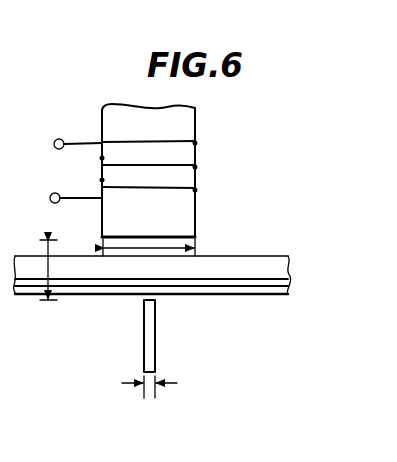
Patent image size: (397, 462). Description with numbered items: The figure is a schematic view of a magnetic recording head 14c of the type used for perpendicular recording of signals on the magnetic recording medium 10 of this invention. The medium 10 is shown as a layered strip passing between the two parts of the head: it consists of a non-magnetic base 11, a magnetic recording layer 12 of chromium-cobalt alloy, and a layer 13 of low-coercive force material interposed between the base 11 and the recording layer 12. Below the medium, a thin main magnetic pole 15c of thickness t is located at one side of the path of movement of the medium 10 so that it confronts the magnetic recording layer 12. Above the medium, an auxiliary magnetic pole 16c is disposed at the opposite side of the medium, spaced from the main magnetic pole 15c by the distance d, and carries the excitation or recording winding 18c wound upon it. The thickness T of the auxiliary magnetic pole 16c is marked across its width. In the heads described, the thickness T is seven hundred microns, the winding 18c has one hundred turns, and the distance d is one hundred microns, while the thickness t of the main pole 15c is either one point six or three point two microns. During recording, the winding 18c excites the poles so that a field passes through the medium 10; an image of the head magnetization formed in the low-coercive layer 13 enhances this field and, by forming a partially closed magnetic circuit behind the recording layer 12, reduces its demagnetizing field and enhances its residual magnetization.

The magnetic recording medium 10 is at (184, 279).
The non-magnetic base 11 is at (291, 262).
The magnetic recording layer 12 is at (279, 296).
The layer of low-coercive force material 13 is at (290, 284).
The magnetic recording head 14c is at (202, 165).
The main magnetic pole 15c is at (225, 331).
The auxiliary magnetic pole 16c is at (185, 112).
The excitation winding 18c is at (160, 167).
The thickness of the auxiliary magnetic pole T is at (150, 246).
The distance between auxiliary and main magnetic poles d is at (46, 276).
The thickness of the main magnetic pole t is at (150, 390).